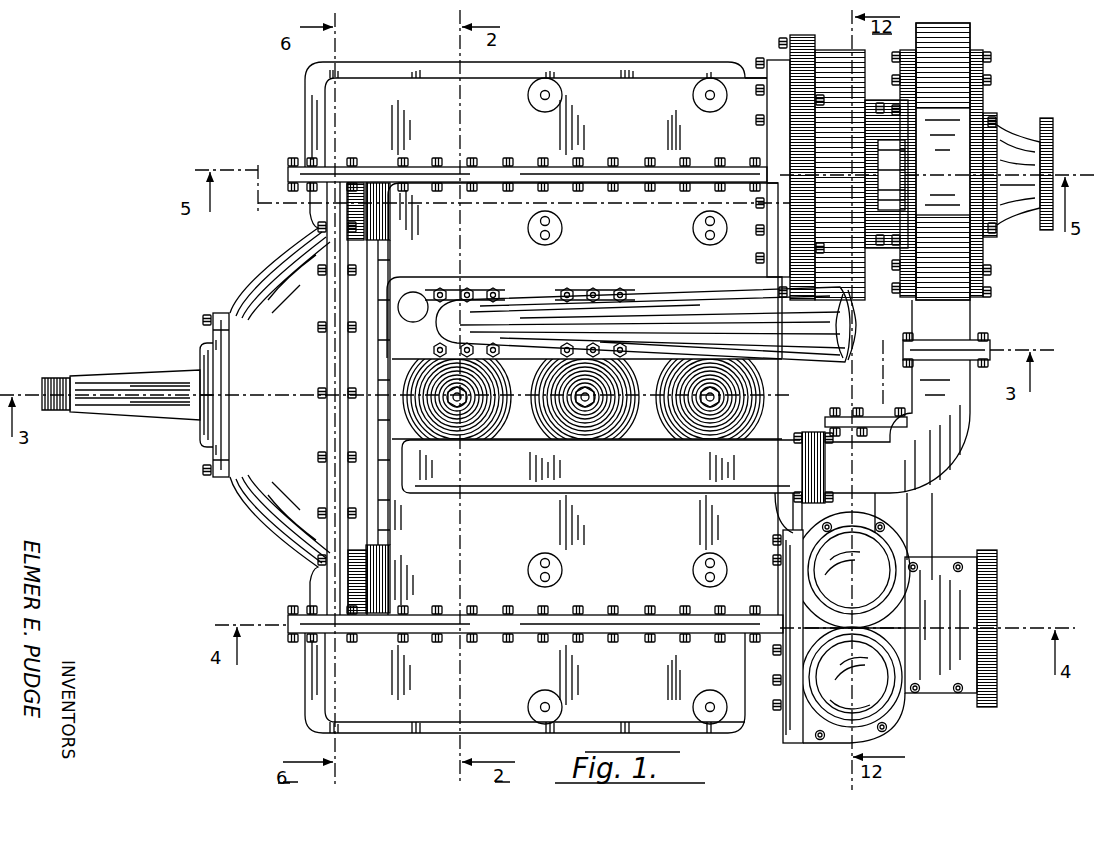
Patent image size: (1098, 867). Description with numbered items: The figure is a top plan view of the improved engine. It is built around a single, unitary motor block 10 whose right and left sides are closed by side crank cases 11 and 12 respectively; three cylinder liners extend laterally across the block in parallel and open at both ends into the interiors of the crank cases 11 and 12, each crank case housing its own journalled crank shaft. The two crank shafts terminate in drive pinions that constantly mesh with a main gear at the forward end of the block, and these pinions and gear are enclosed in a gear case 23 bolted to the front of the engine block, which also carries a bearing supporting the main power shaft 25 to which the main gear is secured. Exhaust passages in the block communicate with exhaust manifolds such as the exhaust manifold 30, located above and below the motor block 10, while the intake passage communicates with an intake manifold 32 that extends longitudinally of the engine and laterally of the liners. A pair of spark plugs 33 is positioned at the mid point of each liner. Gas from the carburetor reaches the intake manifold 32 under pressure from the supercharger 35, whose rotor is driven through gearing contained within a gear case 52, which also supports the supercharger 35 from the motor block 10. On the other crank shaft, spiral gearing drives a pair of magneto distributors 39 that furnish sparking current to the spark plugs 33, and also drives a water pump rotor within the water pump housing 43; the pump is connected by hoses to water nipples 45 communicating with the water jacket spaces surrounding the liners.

The motor block 10 is at (760, 436).
The side crank case 11 is at (325, 106).
The side crank case 12 is at (325, 669).
The gear case 23 is at (262, 282).
The main power shaft 25 is at (143, 375).
The exhaust manifold 30 is at (640, 300).
The intake manifold 32 is at (684, 478).
The spark plugs 33 is at (708, 405).
The pressure blower or supercharger 35 is at (962, 108).
The magneto distributors 39 is at (868, 655).
The water pump housing 43 is at (925, 520).
The water nipples 45 is at (413, 297).
The gear case 52 is at (836, 62).